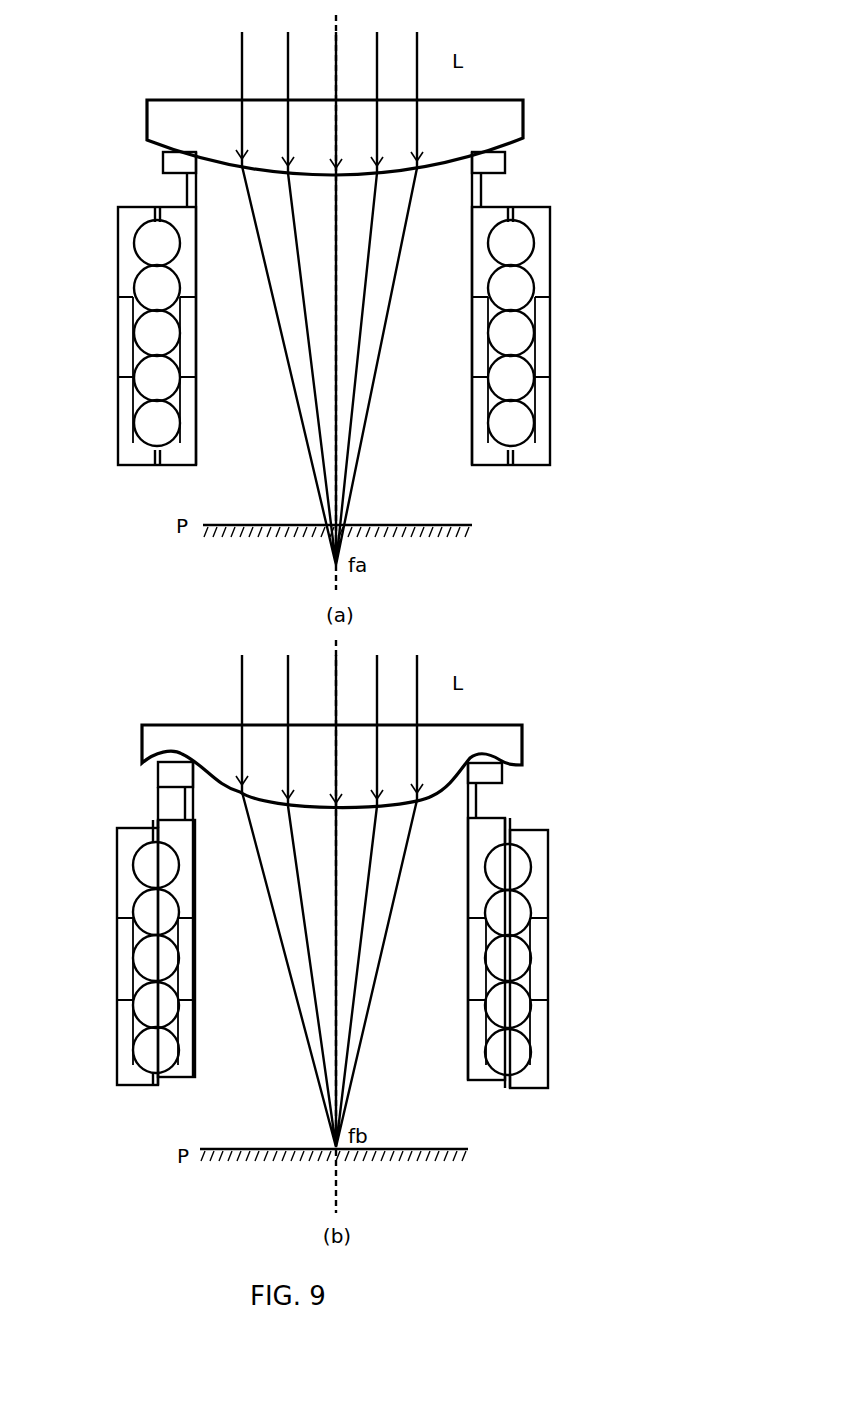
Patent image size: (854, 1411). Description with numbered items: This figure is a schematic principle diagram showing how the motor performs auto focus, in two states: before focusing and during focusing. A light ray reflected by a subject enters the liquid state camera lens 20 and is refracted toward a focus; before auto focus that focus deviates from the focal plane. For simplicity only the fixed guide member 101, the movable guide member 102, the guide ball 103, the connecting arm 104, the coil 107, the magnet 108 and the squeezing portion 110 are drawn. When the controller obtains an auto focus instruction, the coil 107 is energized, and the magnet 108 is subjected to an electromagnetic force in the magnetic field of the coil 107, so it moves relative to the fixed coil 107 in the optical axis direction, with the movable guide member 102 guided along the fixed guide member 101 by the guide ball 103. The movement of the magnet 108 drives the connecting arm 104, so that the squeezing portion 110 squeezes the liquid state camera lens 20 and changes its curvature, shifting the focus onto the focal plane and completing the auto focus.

The liquid state camera lens 20 is at (150, 125).
The squeezing portion 110 is at (167, 171).
The connecting arm 104 is at (478, 196).
The magnet 108 is at (192, 332).
The fixed guide member 101 is at (123, 455).
The movable guide member 102 is at (188, 455).
The guide ball 103 is at (150, 248).
The coil 107 is at (130, 347).